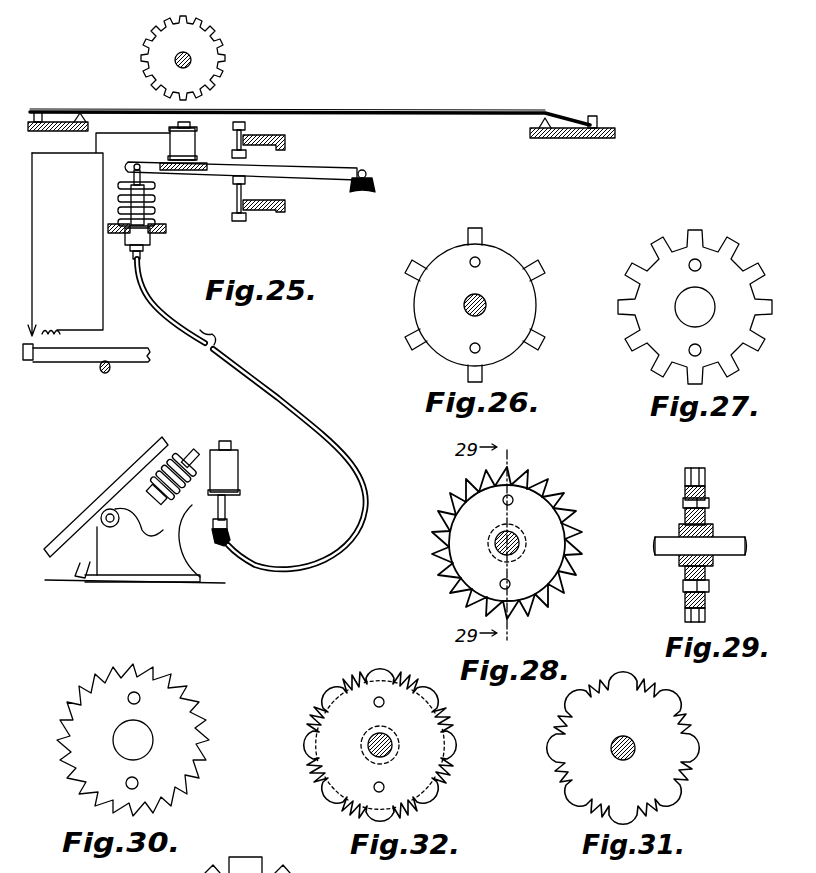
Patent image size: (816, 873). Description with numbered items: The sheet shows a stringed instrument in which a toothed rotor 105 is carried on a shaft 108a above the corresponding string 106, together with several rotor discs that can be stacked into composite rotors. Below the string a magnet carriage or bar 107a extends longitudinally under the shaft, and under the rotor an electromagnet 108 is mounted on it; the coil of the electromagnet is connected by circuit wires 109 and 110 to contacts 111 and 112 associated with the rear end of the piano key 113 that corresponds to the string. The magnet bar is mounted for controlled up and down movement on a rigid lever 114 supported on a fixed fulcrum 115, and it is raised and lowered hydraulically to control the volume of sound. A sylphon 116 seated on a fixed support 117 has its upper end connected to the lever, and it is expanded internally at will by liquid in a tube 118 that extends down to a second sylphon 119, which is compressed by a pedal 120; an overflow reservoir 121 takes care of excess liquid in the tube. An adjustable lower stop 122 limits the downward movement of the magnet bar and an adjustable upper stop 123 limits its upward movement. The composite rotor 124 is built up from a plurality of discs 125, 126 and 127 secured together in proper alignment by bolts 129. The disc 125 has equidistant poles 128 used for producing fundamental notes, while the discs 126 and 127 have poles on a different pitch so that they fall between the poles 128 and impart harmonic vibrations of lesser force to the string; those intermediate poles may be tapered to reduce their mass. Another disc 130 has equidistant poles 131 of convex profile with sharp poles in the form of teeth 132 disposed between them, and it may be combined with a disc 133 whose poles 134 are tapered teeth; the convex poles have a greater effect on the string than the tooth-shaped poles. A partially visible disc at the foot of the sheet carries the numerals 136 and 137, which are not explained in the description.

In FIG. 25, the rotor 105 is at (216, 49).
In FIG. 25, the shaft 108a is at (176, 58).
In FIG. 25, the string 106 is at (409, 110).
In FIG. 25, the magnet carriage or bar 107a is at (241, 181).
In FIG. 25, the electromagnet 108 is at (188, 150).
In FIG. 25, the circuit wire 109 is at (58, 265).
In FIG. 25, the circuit wire 110 is at (103, 283).
In FIG. 25, the contact 111 is at (33, 328).
In FIG. 25, the contact 112 is at (27, 362).
In FIG. 25, the piano key 113 is at (143, 336).
In FIG. 25, the rigid lever 114 is at (333, 168).
In FIG. 25, the fixed fulcrum 115 is at (372, 180).
In FIG. 25, the sylphon 116 is at (157, 213).
In FIG. 25, the fixed support 117 is at (162, 236).
In FIG. 25, the tube 118 is at (296, 400).
In FIG. 25, the sylphon 119 is at (199, 456).
In FIG. 25, the pedal 120 is at (136, 462).
In FIG. 25, the overflow reservoir 121 is at (233, 478).
In FIG. 25, the lower stop 122 is at (247, 184).
In FIG. 25, the upper stop 123 is at (247, 152).
In FIG. 28, the rotor 124 is at (548, 504).
In FIG. 26, the disc 125 is at (507, 262).
In FIG. 28, the disc 125 is at (465, 503).
In FIG. 29, the disc 125 is at (685, 484).
In FIG. 27, the disc 126 is at (733, 273).
In FIG. 28, the disc 126 is at (581, 538).
In FIG. 29, the disc 126 is at (699, 468).
In FIG. 28, the disc 127 is at (577, 525).
In FIG. 29, the disc 127 is at (705, 496).
In FIG. 26, the poles 128 is at (537, 268).
In FIG. 28, the poles 128 is at (568, 504).
In FIG. 28, the bolts 129 is at (519, 587).
In FIG. 29, the bolts 129 is at (709, 503).
In FIG. 32, the disc 130 is at (391, 731).
In FIG. 31, the disc 130 is at (621, 733).
In FIG. 32, the poles 131 is at (432, 690).
In FIG. 31, the poles 131 is at (673, 701).
In FIG. 31, the teeth 132 is at (688, 728).
In FIG. 30, the disc 133 is at (143, 740).
In FIG. 32, the disc 133 is at (352, 682).
In FIG. 30, the poles 134 is at (178, 691).
In FIG. 32, the poles 134 is at (400, 683).
In FIG. 33, the wheel 136 is at (312, 867).
In FIG. 33, the tooth 137 is at (245, 862).